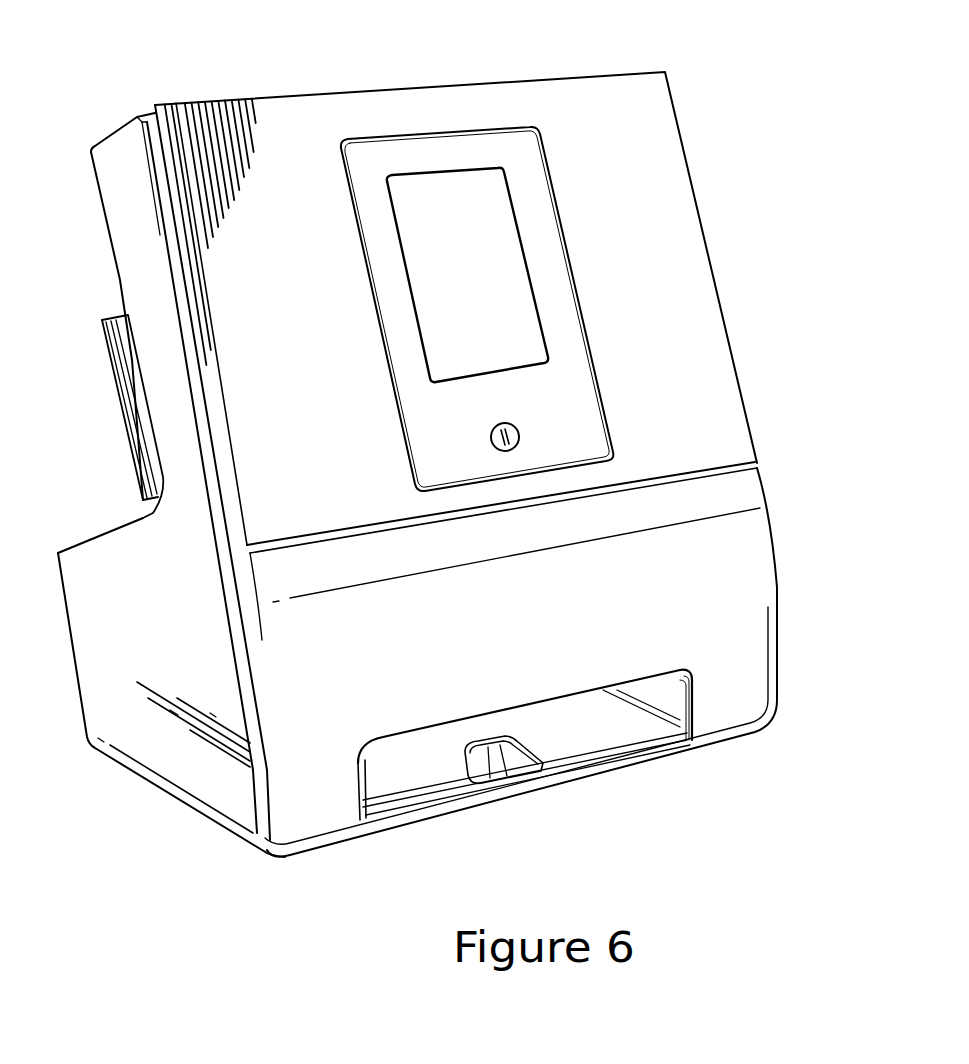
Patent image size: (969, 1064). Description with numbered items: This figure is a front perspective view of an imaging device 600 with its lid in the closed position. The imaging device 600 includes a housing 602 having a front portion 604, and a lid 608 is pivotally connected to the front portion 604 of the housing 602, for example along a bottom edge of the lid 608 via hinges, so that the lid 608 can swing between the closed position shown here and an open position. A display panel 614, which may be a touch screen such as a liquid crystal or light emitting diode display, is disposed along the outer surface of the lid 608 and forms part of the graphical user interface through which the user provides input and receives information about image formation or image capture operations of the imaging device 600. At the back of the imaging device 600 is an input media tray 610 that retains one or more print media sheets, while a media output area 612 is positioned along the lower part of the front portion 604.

The imaging device 600 is at (735, 148).
The housing 602 is at (93, 550).
The front portion 604 is at (753, 543).
The lid 608 is at (693, 287).
The input media tray 610 is at (103, 337).
The media output area 612 is at (660, 687).
The display panel 614 is at (492, 220).